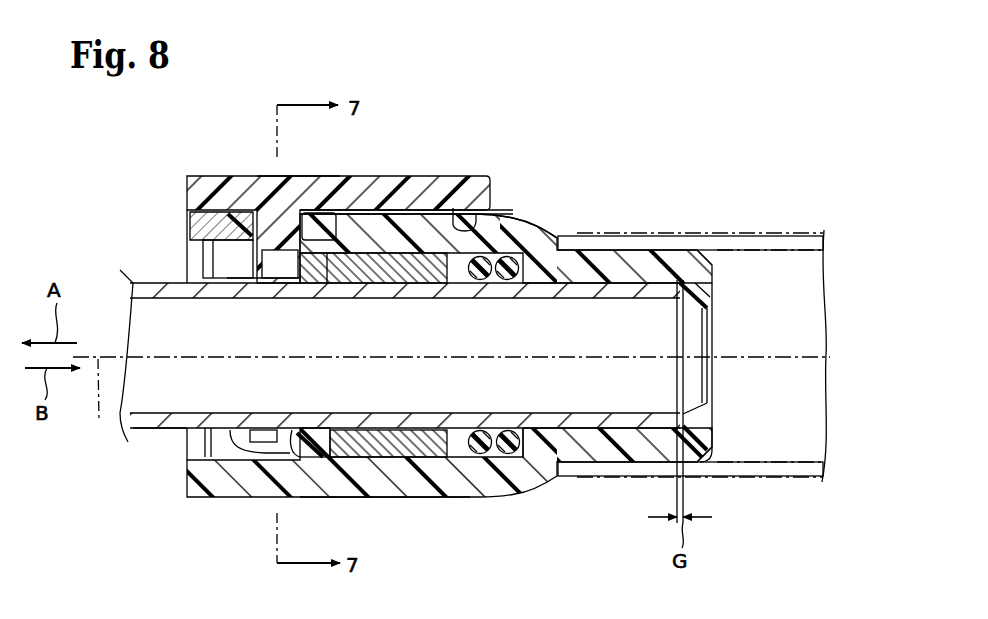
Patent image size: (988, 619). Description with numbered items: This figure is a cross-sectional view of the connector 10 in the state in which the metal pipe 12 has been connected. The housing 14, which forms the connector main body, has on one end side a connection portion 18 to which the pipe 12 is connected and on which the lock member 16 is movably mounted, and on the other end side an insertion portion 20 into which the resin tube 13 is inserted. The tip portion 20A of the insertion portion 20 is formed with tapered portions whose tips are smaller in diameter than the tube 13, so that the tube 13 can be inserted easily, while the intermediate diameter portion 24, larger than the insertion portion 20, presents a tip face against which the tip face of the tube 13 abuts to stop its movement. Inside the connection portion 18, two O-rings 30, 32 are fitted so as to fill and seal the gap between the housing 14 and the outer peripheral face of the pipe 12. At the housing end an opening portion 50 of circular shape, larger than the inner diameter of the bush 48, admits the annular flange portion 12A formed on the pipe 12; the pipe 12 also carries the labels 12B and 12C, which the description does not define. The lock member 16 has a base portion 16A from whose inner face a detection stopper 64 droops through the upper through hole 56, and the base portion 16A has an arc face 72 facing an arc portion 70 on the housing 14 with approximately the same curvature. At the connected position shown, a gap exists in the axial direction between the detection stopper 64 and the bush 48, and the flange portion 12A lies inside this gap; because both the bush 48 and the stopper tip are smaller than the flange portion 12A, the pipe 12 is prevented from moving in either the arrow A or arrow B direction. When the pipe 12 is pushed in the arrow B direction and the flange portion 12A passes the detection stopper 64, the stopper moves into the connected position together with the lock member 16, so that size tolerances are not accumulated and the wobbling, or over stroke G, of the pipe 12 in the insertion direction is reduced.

The connector 10 is at (587, 110).
The pipe 12 is at (146, 281).
The annular flange portion 12A is at (314, 492).
The pipe outer surface 12B is at (147, 430).
The pipe axis position 12C is at (99, 420).
The tube 13 is at (773, 234).
The housing 14 is at (556, 232).
The lock member 16 is at (448, 160).
The base portion 16A is at (318, 174).
The connection portion 18 is at (440, 500).
The insertion portion 20 is at (632, 247).
The tip portion 20A is at (716, 263).
The intermediate diameter portion 24 is at (541, 225).
The O-ring 30 is at (480, 465).
The O-ring 32 is at (523, 462).
The bush 48 is at (365, 254).
The opening portion 50 is at (187, 466).
The upper through hole 56 is at (240, 236).
The detection stopper 64 is at (212, 212).
The arc portion 70 is at (412, 210).
The arc face 72 is at (478, 210).